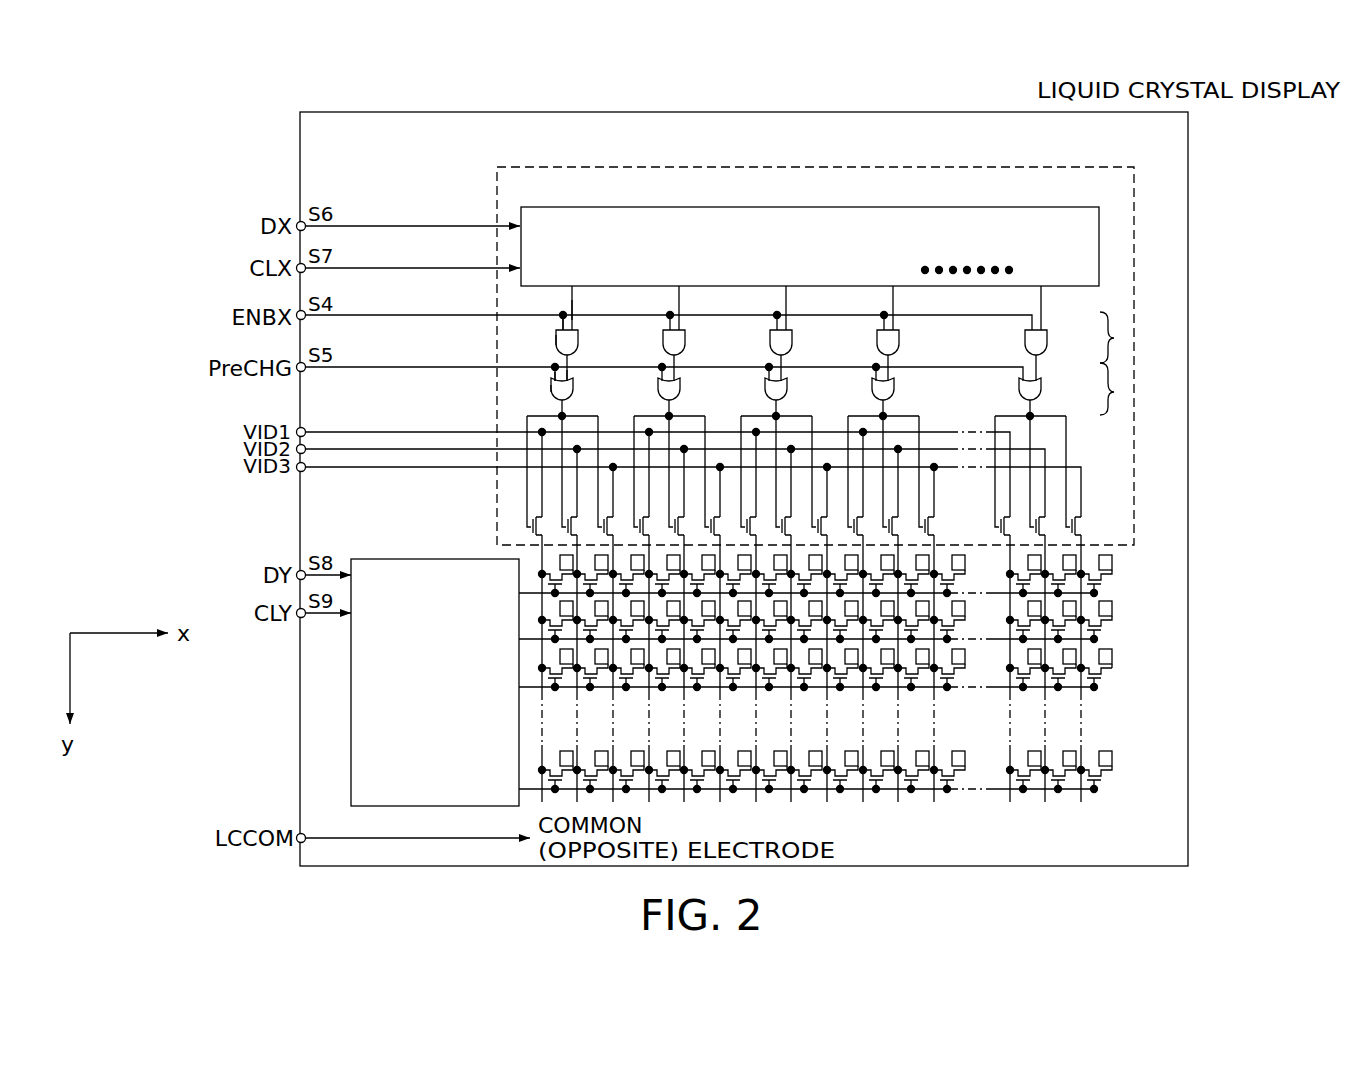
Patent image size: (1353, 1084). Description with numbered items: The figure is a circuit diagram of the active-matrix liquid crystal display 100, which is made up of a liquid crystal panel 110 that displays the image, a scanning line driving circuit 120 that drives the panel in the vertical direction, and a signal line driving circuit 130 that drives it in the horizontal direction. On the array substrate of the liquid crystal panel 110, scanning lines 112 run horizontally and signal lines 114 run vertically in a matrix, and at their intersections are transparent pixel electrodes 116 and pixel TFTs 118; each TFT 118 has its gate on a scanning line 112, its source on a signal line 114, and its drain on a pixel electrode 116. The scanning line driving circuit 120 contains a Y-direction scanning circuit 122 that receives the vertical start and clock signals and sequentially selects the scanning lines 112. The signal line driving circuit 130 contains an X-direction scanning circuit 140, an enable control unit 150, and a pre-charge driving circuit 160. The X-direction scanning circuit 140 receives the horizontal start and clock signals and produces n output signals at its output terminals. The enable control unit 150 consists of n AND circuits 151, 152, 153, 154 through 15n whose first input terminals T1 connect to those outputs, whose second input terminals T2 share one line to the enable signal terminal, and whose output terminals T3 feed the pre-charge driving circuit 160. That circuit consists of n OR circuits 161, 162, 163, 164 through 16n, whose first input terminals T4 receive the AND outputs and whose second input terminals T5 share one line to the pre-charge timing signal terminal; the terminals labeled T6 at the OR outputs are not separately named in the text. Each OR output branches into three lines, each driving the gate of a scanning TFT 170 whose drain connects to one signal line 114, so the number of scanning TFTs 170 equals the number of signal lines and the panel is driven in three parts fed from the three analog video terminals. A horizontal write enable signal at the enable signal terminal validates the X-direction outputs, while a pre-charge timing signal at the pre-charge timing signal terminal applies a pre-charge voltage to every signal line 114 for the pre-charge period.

The liquid crystal display 100 is at (960, 112).
The liquid crystal panel 110 is at (895, 696).
The scanning line 112 is at (1066, 690).
The signal line 114 is at (1082, 697).
The pixel electrode 116 is at (1114, 656).
The thin film transistor (pixel TFT) 118 is at (1103, 679).
The scanning line driving circuit 120 is at (349, 682).
The Y-direction scanning circuit 122 is at (351, 714).
The signal line driving circuit 130 is at (530, 167).
The X-direction scanning circuit 140 is at (1099, 245).
The enable control unit 150 is at (1114, 338).
The AND circuit 151 is at (580, 338).
The AND circuit 152 is at (687, 338).
The AND circuit 153 is at (794, 338).
The AND circuit 154 is at (901, 338).
The AND circuit 15n is at (1049, 338).
The pre-charge driving circuit 160 is at (1114, 392).
The OR circuit 161 is at (578, 385).
The OR circuit 162 is at (685, 385).
The OR circuit 163 is at (792, 385).
The OR circuit 164 is at (899, 385).
The OR circuit 16n is at (1046, 385).
The scanning TFT 170 is at (527, 510).
The first input terminal of AND circuit T1 is at (575, 327).
The second input terminal of AND circuit T2 is at (560, 325).
The output terminal of AND circuit T3 is at (558, 348).
The first input terminal of OR circuit T4 is at (576, 376).
The second input terminal of OR circuit T5 is at (553, 374).
The transistor T6 is at (552, 394).